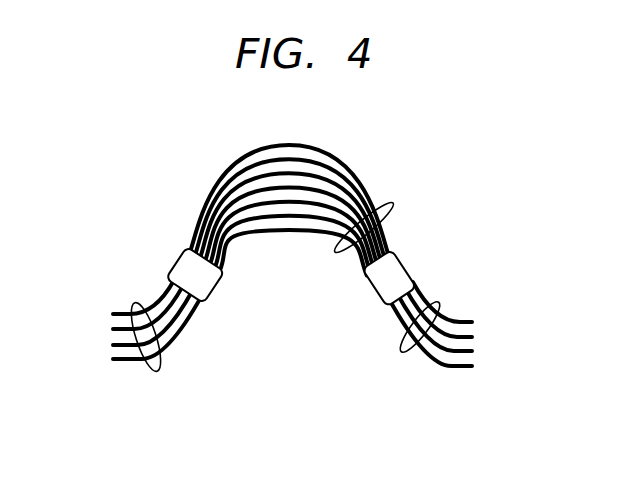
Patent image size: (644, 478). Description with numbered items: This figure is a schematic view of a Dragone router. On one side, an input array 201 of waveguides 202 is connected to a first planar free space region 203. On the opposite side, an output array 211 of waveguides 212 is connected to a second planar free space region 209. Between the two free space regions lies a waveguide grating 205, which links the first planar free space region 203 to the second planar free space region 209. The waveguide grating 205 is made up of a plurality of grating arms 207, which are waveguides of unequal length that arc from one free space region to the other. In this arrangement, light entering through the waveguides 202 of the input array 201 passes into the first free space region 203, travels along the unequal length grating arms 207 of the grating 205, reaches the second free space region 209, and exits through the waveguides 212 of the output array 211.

The input array 201 is at (138, 302).
The waveguides 202 is at (168, 358).
The first planar free space region 203 is at (210, 282).
The waveguide grating 205 is at (395, 205).
The grating arms 207 is at (323, 152).
The second planar free space region 209 is at (376, 287).
The output array 211 is at (440, 303).
The waveguides 212 is at (437, 367).